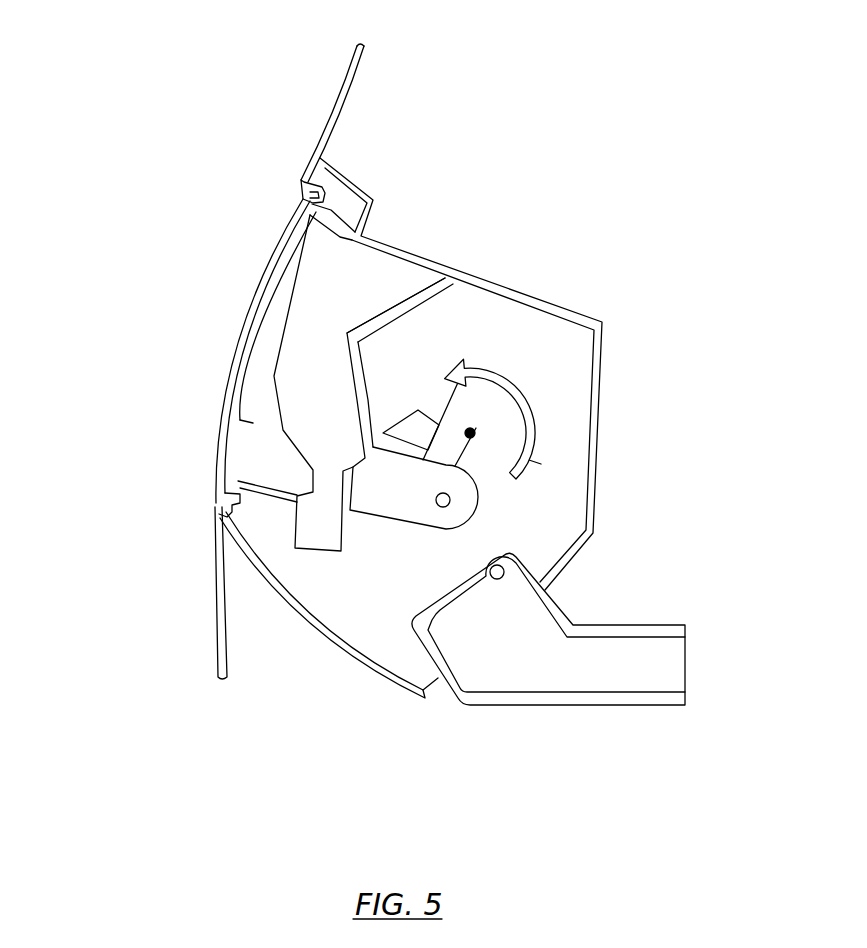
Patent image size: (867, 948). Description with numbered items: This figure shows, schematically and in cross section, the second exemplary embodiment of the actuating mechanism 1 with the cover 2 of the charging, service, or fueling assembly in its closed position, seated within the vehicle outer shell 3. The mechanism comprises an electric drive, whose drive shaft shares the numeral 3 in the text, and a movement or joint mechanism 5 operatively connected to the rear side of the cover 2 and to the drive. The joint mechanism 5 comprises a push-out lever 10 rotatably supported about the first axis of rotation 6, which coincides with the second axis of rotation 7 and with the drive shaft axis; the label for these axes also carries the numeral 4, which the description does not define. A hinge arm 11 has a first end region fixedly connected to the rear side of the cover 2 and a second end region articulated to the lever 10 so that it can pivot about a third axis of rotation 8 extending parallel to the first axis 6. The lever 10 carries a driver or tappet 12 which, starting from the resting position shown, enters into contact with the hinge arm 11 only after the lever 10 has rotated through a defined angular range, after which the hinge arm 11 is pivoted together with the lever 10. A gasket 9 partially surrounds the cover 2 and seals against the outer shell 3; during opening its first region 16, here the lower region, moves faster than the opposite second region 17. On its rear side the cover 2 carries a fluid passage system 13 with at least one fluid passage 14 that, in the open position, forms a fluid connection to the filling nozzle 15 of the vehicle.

The actuating mechanism 1 is at (410, 120).
The cover 2 is at (245, 312).
The vehicle outer shell 3 is at (346, 77).
The pivot shaft 4 is at (616, 352).
The movement mechanism or joint mechanism 5 is at (543, 497).
The first axis of rotation 6 is at (616, 352).
The second axis of rotation 7 is at (473, 435).
The third axis of rotation 8 is at (440, 505).
The gasket 9 is at (182, 326).
The lever 10 is at (478, 461).
The hinge arm 11 is at (391, 496).
The driver 12 is at (417, 435).
The fluid passage system 13 is at (375, 327).
The fluid passage 14 is at (297, 327).
The filling nozzle 15 is at (628, 672).
The first region of the gasket 16 is at (220, 500).
The second region of the gasket 17 is at (308, 187).